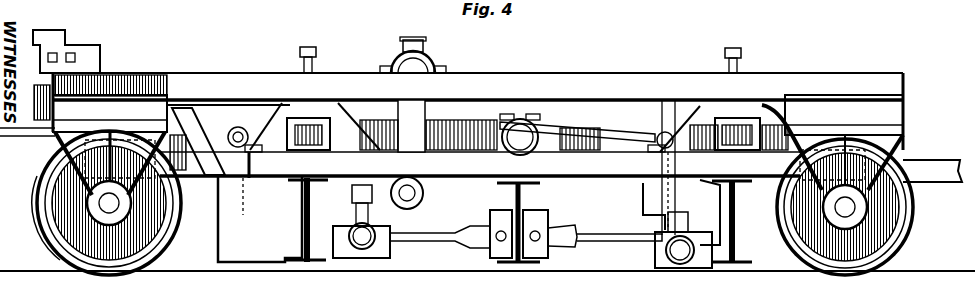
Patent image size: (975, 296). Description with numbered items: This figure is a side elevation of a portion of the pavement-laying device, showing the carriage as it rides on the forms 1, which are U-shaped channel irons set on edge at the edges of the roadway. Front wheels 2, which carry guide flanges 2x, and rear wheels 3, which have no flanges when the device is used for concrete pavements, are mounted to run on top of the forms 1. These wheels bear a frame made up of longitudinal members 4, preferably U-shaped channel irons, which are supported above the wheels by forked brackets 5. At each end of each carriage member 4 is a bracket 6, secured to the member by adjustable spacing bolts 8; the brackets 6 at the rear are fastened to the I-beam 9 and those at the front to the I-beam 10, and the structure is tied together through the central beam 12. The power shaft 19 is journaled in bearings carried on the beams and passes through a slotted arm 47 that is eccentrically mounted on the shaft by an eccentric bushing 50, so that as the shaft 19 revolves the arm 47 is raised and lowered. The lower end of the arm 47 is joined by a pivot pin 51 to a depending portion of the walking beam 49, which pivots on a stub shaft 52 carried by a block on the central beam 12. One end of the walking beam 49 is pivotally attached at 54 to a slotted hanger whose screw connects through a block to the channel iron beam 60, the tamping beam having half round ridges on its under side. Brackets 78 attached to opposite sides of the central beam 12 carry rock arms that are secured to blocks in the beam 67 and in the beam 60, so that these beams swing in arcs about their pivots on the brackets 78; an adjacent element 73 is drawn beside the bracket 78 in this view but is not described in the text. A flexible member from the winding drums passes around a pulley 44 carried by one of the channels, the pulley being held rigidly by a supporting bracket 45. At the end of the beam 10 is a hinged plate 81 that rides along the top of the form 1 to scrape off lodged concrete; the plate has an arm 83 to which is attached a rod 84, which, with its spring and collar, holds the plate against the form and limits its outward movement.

The forms 1 is at (935, 274).
The front wheels 2 is at (62, 266).
The guide flanges 2x is at (42, 232).
The rear wheels 3 is at (895, 242).
The longitudinal members 4 is at (632, 73).
The forked brackets 5 is at (45, 135).
The bracket 6 is at (318, 116).
The adjustable spacing bolts 8 is at (525, 49).
The beam 9 is at (736, 228).
The I-beam 10 is at (308, 222).
The central beam 12 is at (522, 208).
The shaft 19 is at (402, 64).
The pulley 44 is at (186, 106).
The supporting bracket 45 is at (228, 91).
The arm 47 is at (422, 118).
The walking beam 49 is at (470, 150).
The eccentric bushing 50 is at (438, 58).
The pivot pin 51 is at (410, 197).
The stub shaft 52 is at (540, 150).
The pivotal attachment 54 is at (362, 148).
The channel iron beam 60 is at (392, 250).
The beam 67 is at (692, 268).
The brake cylinder 73 is at (492, 225).
The brackets 78 is at (562, 227).
The hinged plate 81 is at (706, 228).
The arm 83 is at (252, 155).
The rod 84 is at (622, 126).